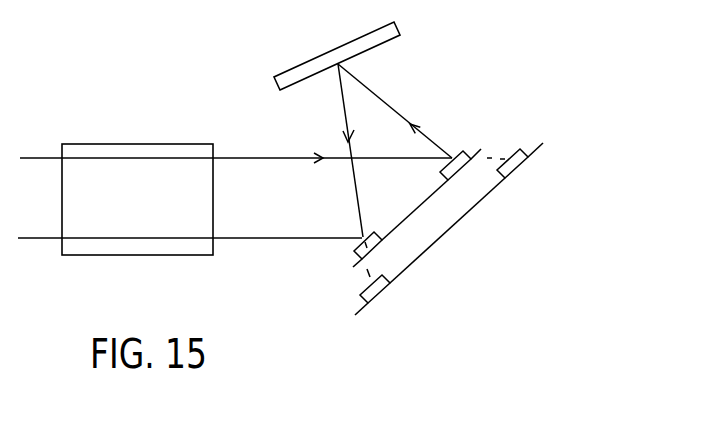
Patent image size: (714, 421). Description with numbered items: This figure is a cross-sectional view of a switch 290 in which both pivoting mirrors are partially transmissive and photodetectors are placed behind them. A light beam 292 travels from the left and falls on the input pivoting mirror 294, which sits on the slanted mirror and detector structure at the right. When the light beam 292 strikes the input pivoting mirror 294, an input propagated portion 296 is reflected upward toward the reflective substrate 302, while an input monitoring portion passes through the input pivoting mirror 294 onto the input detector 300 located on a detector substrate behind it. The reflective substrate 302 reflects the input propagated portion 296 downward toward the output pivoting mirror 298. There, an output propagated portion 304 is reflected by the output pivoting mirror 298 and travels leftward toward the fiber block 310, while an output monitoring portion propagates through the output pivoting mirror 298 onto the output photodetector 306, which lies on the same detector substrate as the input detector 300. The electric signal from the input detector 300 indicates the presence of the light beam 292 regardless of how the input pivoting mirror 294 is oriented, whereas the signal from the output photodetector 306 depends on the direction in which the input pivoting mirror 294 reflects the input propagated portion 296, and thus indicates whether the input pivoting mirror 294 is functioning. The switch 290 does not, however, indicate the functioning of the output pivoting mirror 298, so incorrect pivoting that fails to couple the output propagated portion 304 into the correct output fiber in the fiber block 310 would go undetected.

The switch 290 is at (137, 80).
The light beam 292 is at (236, 148).
The input pivoting mirror 294 is at (477, 148).
The input propagated portion 296 is at (393, 100).
The output pivoting mirror 298 is at (379, 230).
The input detector 300 is at (522, 146).
The reflective substrate 302 is at (398, 29).
The output propagated portion 304 is at (190, 225).
The output photodetector 306 is at (358, 298).
The fiber block 310 is at (152, 247).